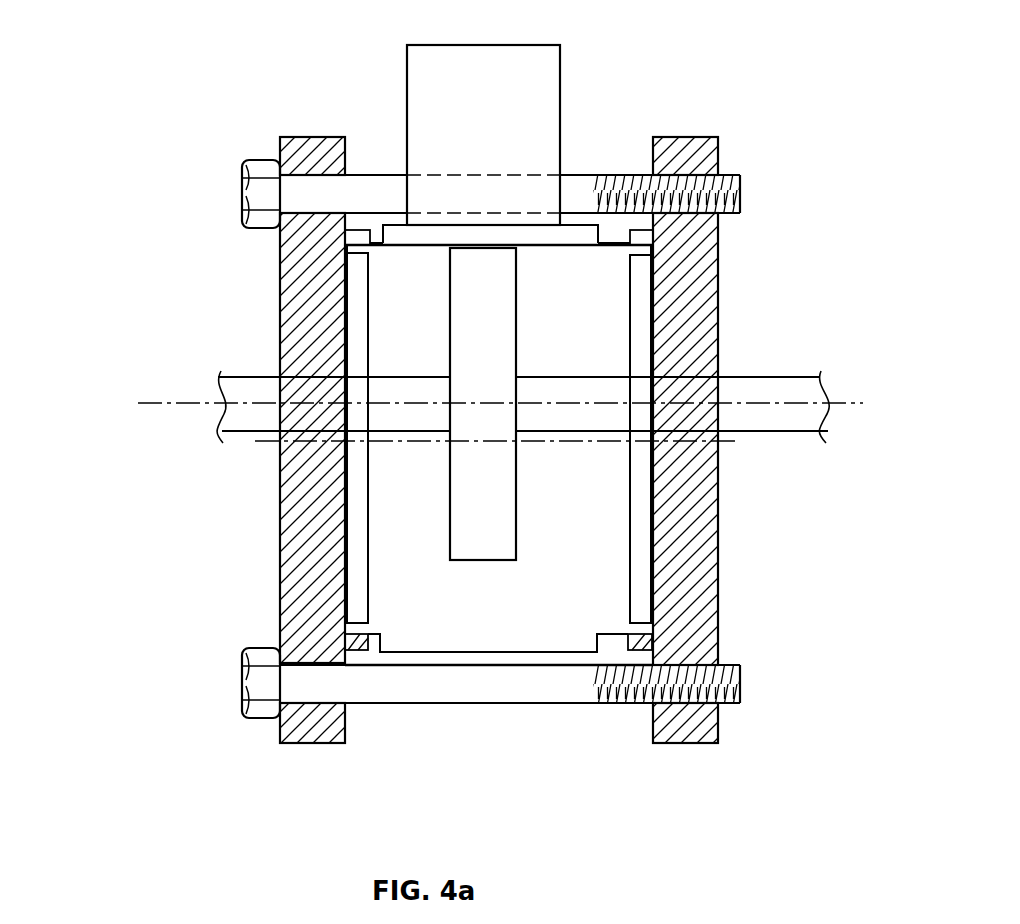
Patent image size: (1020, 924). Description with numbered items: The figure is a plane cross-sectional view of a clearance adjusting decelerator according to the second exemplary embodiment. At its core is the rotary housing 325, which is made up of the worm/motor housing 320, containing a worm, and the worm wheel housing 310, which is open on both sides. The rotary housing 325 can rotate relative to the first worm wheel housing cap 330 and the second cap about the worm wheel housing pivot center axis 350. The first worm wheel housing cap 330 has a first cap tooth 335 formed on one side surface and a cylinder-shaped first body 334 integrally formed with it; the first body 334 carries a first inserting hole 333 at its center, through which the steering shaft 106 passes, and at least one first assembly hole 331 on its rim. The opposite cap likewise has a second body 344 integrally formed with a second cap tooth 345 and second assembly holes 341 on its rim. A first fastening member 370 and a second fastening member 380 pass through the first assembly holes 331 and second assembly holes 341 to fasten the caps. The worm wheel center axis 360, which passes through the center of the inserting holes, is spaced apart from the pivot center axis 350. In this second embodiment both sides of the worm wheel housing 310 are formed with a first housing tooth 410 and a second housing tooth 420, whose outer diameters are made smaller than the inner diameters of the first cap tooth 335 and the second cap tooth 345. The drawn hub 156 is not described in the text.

The steering shaft 106 is at (797, 387).
The hub 156 is at (504, 305).
The worm wheel housing 310 is at (376, 299).
The worm/motor housing 320 is at (435, 96).
The rotary housing 325 is at (150, 95).
The first worm wheel housing cap 330 is at (140, 550).
The first assembly hole 331 is at (281, 214).
The first inserting hole 333 is at (264, 441).
The first body 334 is at (289, 526).
The first cap tooth 335 is at (350, 640).
The second assembly hole 341 is at (656, 172).
The second body 344 is at (700, 551).
The second cap tooth 345 is at (662, 236).
The worm wheel housing pivot center axis 350 is at (735, 447).
The worm wheel center axis 360 is at (854, 404).
The first fastening member 370 is at (742, 690).
The second fastening member 380 is at (742, 195).
The first housing tooth 410 is at (645, 629).
The second housing tooth 420 is at (367, 628).